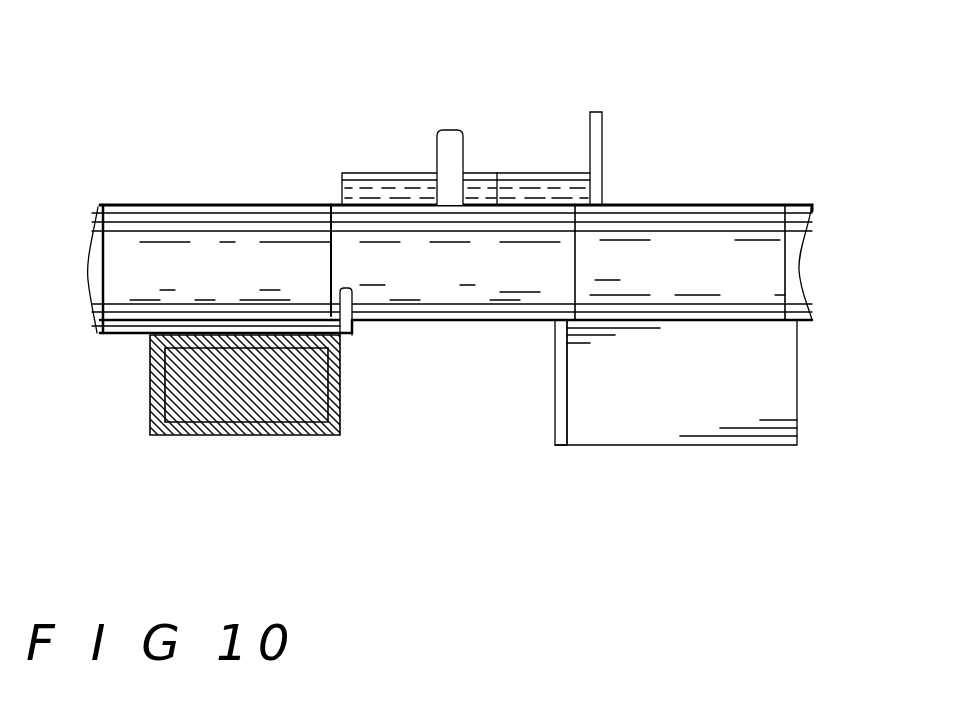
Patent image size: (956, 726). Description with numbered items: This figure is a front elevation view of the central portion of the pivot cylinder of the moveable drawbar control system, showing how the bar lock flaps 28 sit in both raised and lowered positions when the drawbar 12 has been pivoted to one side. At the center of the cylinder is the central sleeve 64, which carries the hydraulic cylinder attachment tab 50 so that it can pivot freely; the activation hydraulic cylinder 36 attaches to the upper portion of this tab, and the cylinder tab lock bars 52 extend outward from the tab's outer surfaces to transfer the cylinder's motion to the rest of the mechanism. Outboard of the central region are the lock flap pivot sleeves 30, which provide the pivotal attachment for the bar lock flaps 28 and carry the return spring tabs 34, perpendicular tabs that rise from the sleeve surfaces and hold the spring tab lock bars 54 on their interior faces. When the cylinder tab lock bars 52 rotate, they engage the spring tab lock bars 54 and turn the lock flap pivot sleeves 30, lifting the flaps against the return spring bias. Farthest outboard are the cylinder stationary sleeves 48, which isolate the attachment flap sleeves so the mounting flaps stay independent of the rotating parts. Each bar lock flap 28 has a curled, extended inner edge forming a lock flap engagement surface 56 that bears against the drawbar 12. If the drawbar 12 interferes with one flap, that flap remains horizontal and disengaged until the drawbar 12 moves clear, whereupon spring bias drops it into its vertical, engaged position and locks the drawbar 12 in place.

The drawbar 12 is at (293, 438).
The bar lock flaps 28 is at (130, 337).
The lock flap pivot sleeves 30 is at (702, 200).
The return spring tabs 34 is at (607, 117).
The activation hydraulic cylinder 36 is at (223, 203).
The cylinder stationary sleeves 48 is at (102, 200).
The hydraulic cylinder attachment tab 50 is at (449, 130).
The cylinder tab lock bars 52 is at (375, 173).
The spring tab lock bars 54 is at (545, 173).
The lock flap engagement surfaces 56 is at (347, 310).
The central sleeve 64 is at (442, 295).